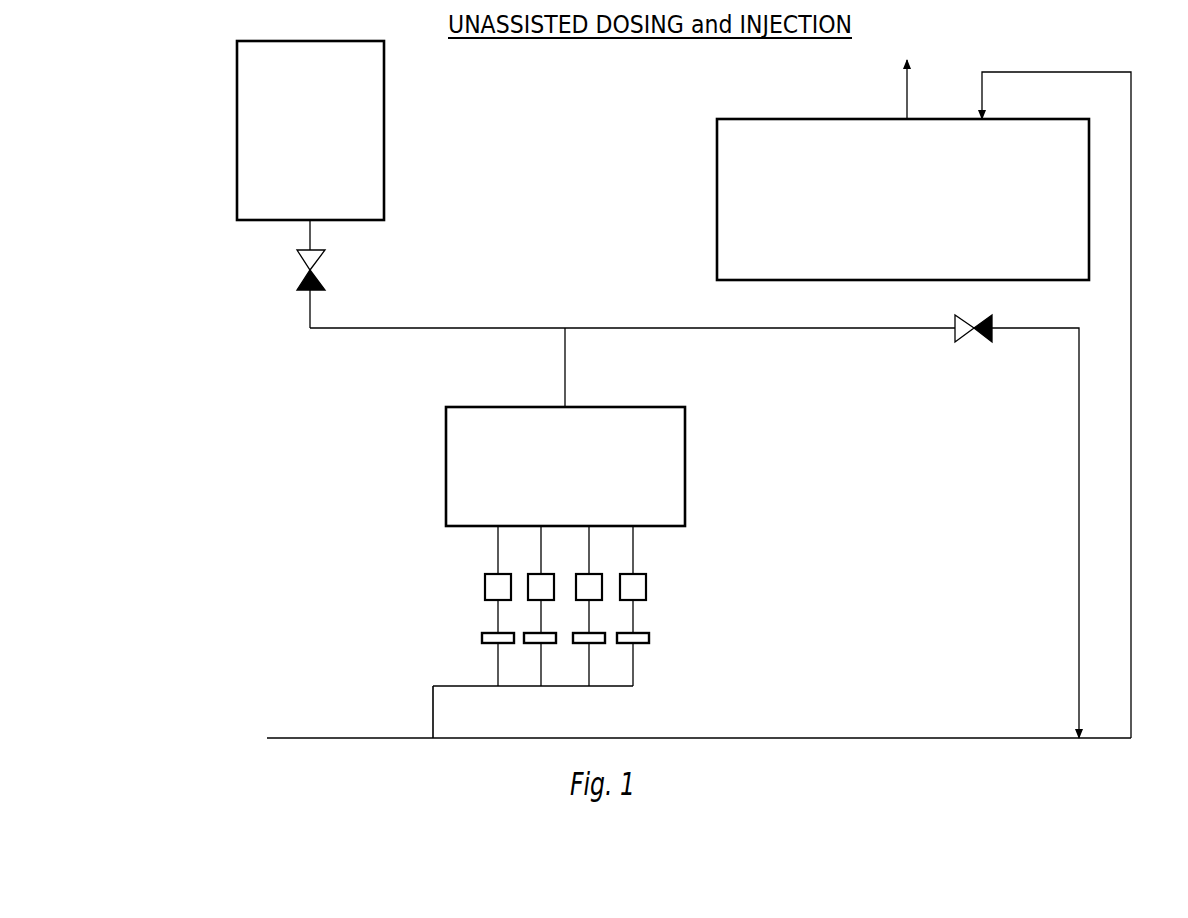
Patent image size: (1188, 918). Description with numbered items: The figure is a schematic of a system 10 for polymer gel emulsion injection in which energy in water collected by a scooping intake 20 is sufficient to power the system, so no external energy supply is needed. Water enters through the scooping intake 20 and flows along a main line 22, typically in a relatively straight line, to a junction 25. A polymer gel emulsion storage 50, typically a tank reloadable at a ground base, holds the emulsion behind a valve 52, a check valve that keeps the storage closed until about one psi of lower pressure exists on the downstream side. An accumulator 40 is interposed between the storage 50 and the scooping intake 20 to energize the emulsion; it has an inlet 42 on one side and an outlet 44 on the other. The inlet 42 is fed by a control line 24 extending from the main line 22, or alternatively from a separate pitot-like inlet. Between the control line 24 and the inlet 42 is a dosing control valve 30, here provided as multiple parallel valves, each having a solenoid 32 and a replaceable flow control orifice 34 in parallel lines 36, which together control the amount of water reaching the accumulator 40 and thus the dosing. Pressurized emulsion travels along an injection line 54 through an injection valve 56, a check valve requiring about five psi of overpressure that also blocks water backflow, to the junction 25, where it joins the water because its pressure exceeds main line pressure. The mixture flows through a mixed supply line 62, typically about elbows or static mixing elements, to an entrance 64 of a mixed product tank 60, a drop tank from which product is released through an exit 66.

The system for polymer gel emulsion injection 10 is at (948, 753).
The scooping intake 20 is at (357, 740).
The main line 22 is at (703, 740).
The control line 24 is at (465, 688).
The junction 25 is at (1080, 742).
The dosing control valve 30 is at (446, 608).
The solenoid 32 is at (532, 562).
The flow control orifice 34 is at (528, 633).
The parallel lines 36 is at (498, 674).
The accumulator 40 is at (446, 466).
The inlet 42 is at (567, 525).
The outlet 44 is at (566, 348).
The polymer gel emulsion storage 50 is at (385, 176).
The valve 52 is at (318, 264).
The injection line 54 is at (724, 328).
The injection valve 56 is at (955, 322).
The mixed product tank 60 is at (717, 214).
The mixed supply line 62 is at (1131, 245).
The entrance 64 is at (980, 110).
The exit 66 is at (907, 99).